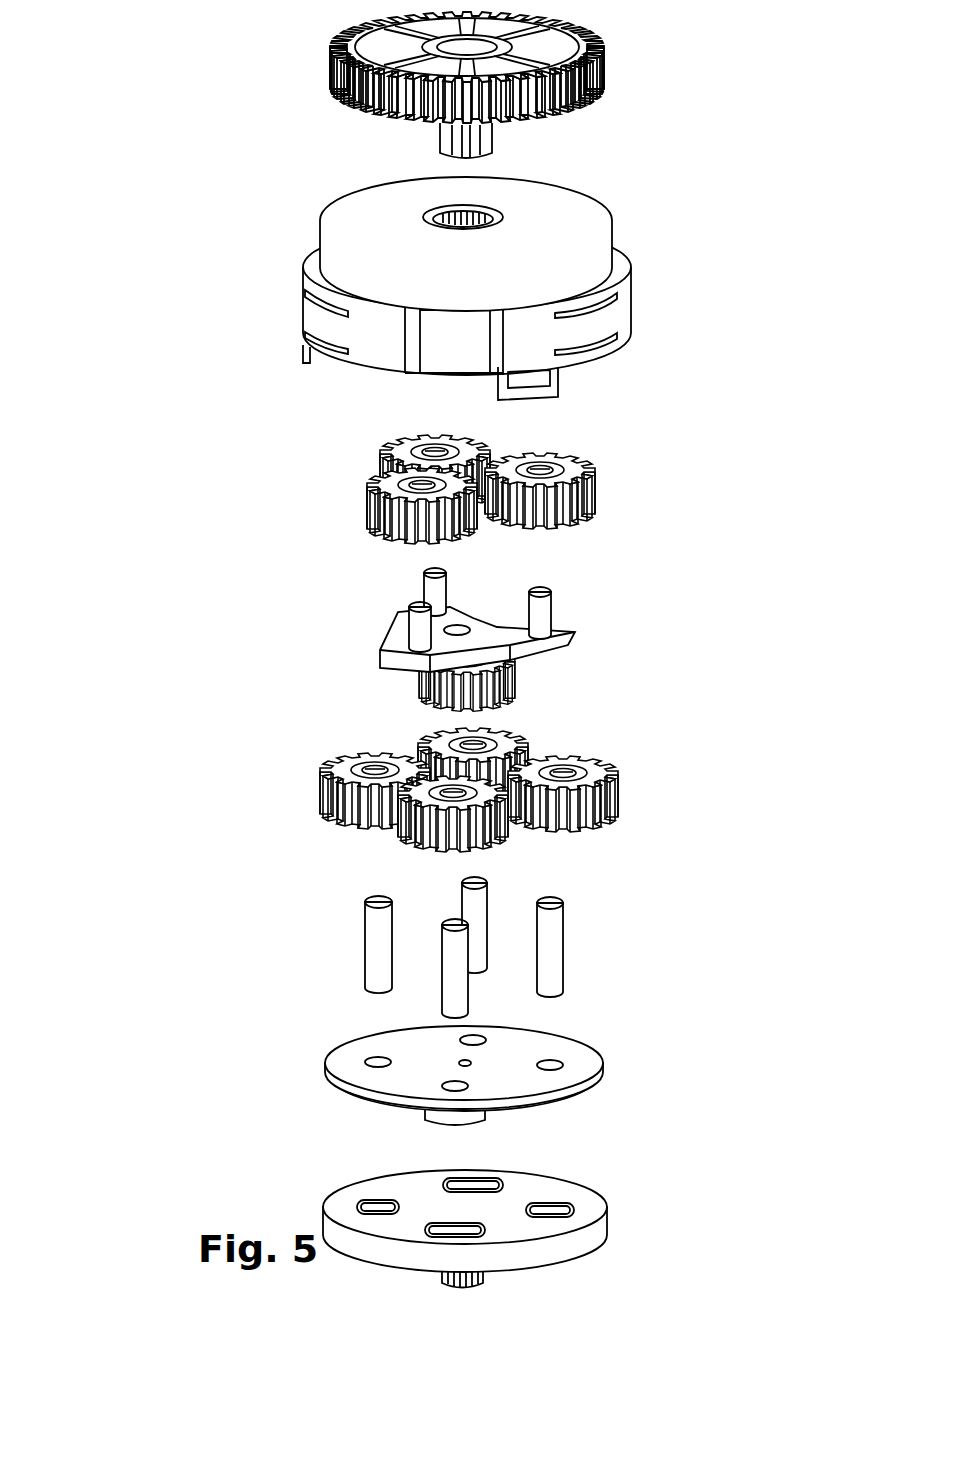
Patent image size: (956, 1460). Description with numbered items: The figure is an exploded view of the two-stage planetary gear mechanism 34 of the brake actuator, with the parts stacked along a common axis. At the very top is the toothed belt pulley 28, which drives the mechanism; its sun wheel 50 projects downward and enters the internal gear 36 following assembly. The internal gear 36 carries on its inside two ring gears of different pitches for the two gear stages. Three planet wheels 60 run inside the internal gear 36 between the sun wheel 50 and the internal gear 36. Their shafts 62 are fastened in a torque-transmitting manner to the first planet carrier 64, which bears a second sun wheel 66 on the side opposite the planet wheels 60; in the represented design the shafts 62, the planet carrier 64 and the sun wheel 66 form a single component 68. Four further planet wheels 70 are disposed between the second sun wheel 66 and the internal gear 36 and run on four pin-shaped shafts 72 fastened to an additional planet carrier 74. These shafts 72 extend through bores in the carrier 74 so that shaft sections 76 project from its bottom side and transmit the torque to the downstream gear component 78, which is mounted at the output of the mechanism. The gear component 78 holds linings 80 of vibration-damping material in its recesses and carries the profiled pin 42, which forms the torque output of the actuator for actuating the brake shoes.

The planetary gear mechanism 34 is at (138, 212).
The toothed belt pulley 28 is at (598, 74).
The sun wheel 50 is at (510, 140).
The internal gear 36 is at (600, 240).
The planet wheels 60 is at (616, 490).
The shafts 62 is at (566, 600).
The first planet carrier 64 is at (565, 648).
The second sun wheel 66 is at (510, 684).
The single component 68 is at (360, 632).
The further planet wheels 70 is at (631, 815).
The pin-shaped shafts 72 is at (589, 953).
The additional planet carrier 74 is at (600, 1073).
The shaft sections 76 is at (553, 985).
The gear component 78 is at (597, 1230).
The linings 80 is at (548, 1206).
The pin 42 is at (488, 1285).